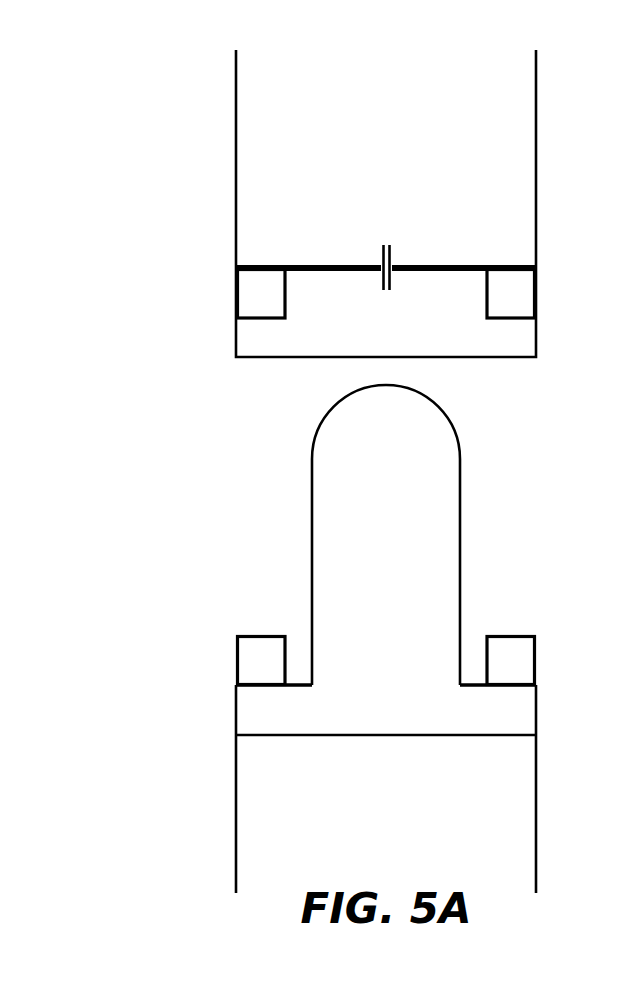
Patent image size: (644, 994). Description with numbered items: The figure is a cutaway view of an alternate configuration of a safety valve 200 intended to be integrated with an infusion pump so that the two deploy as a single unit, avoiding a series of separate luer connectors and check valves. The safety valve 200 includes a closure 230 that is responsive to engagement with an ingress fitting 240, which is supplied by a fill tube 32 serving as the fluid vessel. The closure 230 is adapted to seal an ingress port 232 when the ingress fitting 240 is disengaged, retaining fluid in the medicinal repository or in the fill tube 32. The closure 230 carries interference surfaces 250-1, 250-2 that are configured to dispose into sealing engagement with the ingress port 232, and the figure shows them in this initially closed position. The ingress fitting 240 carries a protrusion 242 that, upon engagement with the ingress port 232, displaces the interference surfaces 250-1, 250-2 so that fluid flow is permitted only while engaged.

The safety valve 200 is at (166, 188).
The closure 230 is at (201, 299).
The ingress port 232 is at (490, 393).
The ingress fitting 240 is at (201, 705).
The protrusion 242 is at (407, 453).
The interference surface 250-1 is at (327, 265).
The interference surface 250-2 is at (470, 265).
The fill tube 32 is at (538, 790).